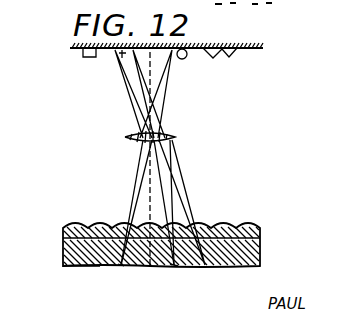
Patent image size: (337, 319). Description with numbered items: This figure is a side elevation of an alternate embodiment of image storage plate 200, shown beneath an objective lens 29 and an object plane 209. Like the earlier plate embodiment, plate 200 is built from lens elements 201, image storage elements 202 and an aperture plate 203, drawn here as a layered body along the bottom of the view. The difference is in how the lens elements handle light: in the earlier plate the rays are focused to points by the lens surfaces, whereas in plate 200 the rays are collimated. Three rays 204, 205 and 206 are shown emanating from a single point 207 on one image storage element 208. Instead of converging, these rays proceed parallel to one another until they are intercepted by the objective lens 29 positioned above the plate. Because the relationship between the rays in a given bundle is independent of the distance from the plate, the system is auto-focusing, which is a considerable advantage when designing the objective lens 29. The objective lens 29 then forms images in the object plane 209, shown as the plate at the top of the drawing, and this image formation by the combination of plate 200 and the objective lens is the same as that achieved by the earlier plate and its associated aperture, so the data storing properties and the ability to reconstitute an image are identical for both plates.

The objective lens 29 is at (173, 136).
The image storage plate 200 is at (170, 256).
The lens elements 201 is at (226, 229).
The image storage elements 202 is at (98, 267).
The aperture plate 203 is at (256, 231).
The ray 204 is at (136, 167).
The ray 205 is at (139, 186).
The ray 206 is at (144, 207).
The point 207 is at (119, 268).
The image storage element 208 is at (127, 268).
The object plane 209 is at (245, 48).